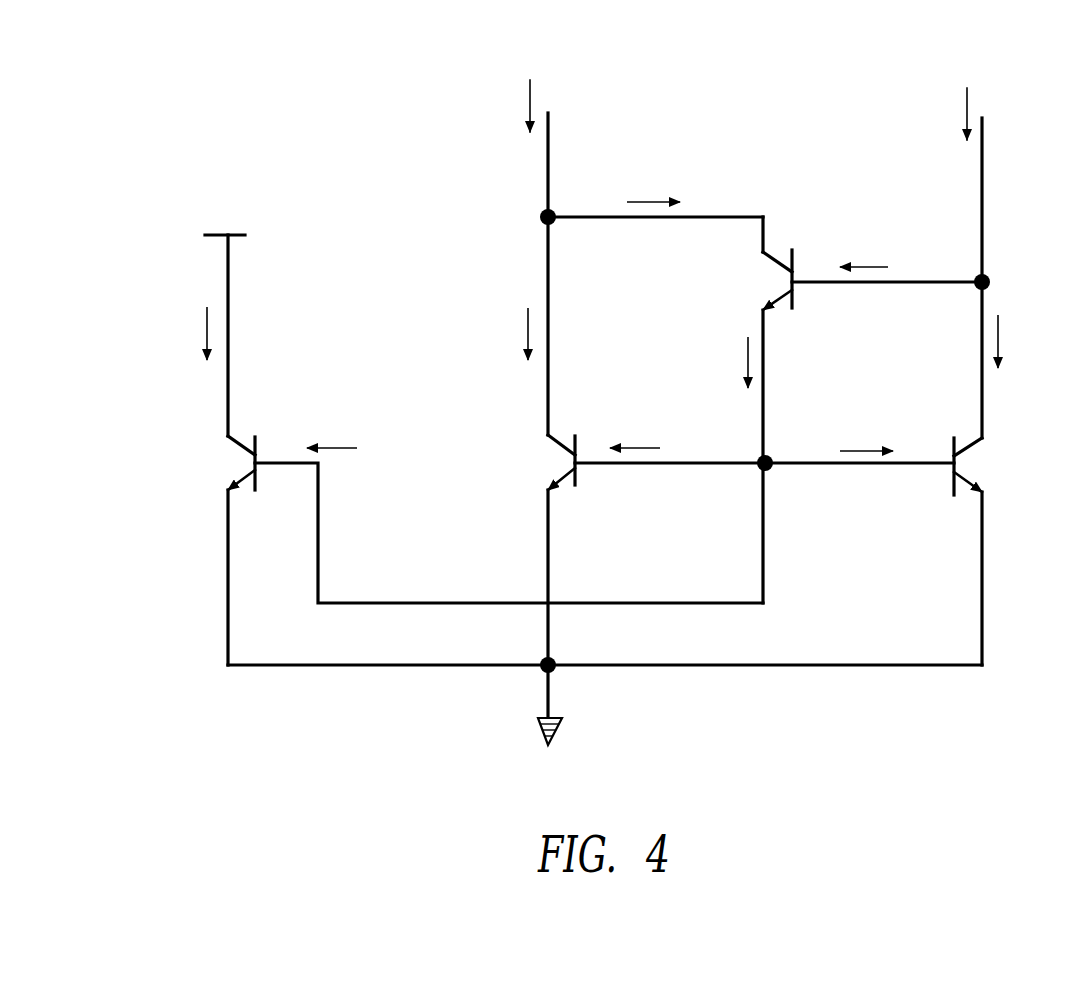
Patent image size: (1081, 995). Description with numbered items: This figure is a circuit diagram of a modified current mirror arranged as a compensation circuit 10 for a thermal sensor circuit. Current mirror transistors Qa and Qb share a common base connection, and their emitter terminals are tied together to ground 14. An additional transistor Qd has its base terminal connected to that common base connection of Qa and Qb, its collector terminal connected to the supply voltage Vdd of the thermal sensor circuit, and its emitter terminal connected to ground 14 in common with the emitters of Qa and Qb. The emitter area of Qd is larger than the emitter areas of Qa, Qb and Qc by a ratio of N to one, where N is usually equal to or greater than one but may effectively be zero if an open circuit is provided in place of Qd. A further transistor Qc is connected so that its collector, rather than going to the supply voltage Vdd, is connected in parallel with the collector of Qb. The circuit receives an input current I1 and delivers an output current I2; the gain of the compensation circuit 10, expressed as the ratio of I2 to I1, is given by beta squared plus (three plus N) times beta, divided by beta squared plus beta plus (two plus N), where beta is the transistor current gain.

The compensation circuit 10 is at (408, 125).
The ground 14 is at (540, 736).
The current mirror transistor Qa is at (1004, 458).
The current mirror transistor Qb is at (525, 452).
The transistor Qc is at (742, 275).
The additional transistor Qd is at (200, 452).
The input current I1 is at (989, 182).
The output current I2 is at (554, 147).
The supply voltage Vdd is at (223, 318).